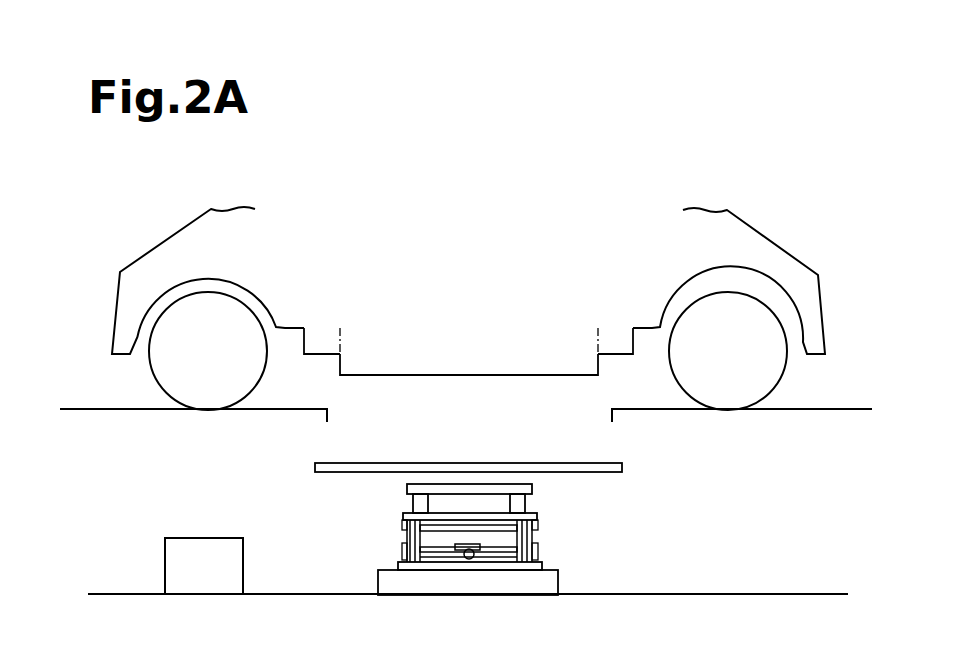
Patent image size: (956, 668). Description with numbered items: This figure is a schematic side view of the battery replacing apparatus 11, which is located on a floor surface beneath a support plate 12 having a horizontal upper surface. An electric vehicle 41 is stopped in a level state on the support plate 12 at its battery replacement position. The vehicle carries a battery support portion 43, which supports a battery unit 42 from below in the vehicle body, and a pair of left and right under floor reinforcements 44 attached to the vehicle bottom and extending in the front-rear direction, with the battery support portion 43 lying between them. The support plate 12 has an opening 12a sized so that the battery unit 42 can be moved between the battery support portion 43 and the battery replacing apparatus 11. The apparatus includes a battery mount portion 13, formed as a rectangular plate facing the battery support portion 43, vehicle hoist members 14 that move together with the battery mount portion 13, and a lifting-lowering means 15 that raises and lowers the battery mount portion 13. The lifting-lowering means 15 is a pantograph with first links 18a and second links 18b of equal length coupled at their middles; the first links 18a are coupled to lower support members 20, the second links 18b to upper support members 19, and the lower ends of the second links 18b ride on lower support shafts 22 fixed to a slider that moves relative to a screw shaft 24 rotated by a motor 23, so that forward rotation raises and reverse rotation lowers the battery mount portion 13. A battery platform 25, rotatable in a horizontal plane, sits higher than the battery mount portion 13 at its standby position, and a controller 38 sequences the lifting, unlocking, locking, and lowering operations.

The battery replacing apparatus 11 is at (492, 560).
The support plate 12 is at (828, 409).
The opening 12a is at (612, 422).
The battery mount portion 13 is at (403, 516).
The vehicle hoist members 14 is at (532, 489).
The lifting-lowering means 15 is at (429, 570).
The first link 18a is at (407, 536).
The second link 18b is at (428, 552).
The upper support members 19 is at (402, 524).
The lower support members 20 is at (402, 550).
The lower support shaft 22 is at (440, 557).
The motor 23 is at (491, 548).
The screw shaft 24 is at (480, 548).
The battery platform 25 is at (624, 468).
The controller 38 is at (188, 538).
The electric vehicle 41 is at (767, 238).
The battery unit 42 is at (510, 366).
The battery support portion 43 is at (619, 369).
The under floor reinforcements 44 is at (322, 336).